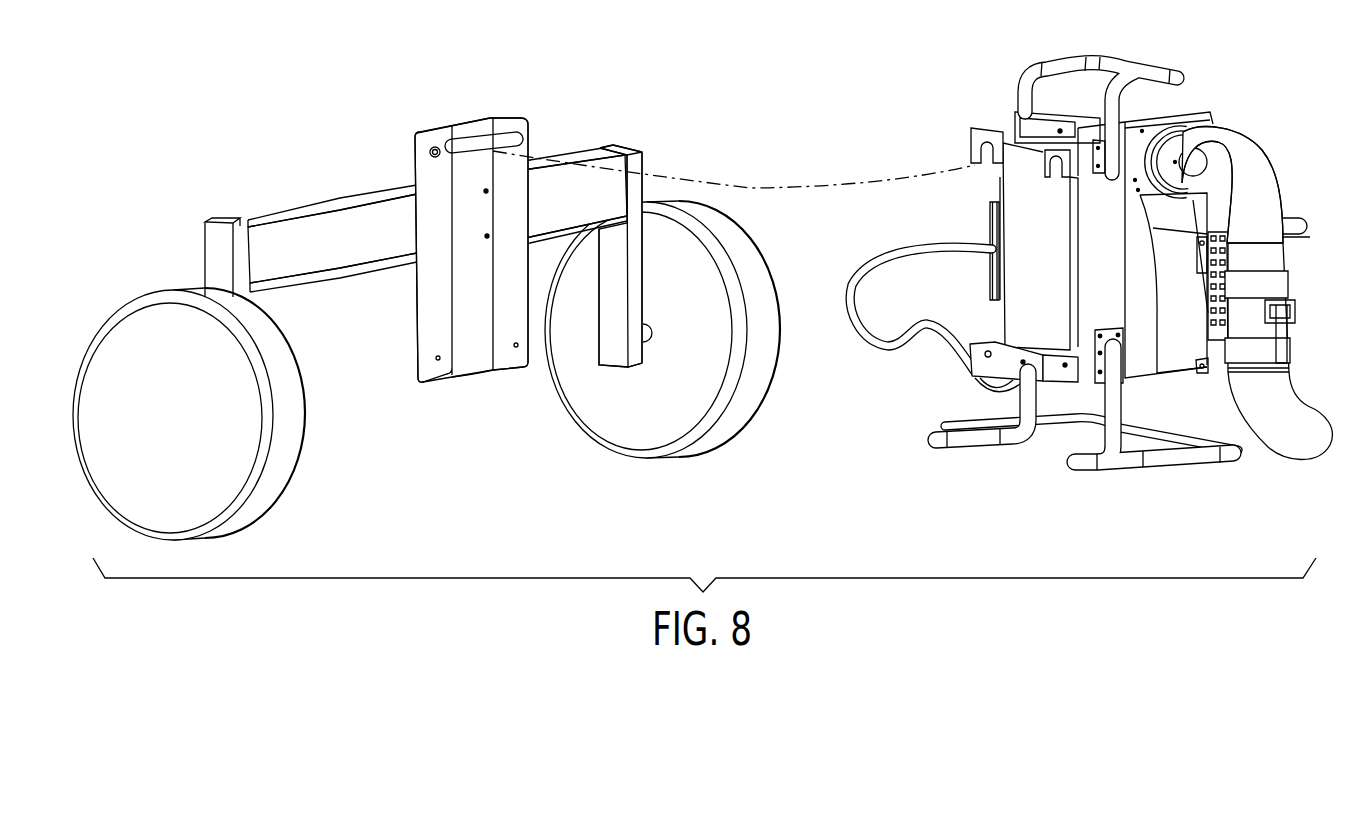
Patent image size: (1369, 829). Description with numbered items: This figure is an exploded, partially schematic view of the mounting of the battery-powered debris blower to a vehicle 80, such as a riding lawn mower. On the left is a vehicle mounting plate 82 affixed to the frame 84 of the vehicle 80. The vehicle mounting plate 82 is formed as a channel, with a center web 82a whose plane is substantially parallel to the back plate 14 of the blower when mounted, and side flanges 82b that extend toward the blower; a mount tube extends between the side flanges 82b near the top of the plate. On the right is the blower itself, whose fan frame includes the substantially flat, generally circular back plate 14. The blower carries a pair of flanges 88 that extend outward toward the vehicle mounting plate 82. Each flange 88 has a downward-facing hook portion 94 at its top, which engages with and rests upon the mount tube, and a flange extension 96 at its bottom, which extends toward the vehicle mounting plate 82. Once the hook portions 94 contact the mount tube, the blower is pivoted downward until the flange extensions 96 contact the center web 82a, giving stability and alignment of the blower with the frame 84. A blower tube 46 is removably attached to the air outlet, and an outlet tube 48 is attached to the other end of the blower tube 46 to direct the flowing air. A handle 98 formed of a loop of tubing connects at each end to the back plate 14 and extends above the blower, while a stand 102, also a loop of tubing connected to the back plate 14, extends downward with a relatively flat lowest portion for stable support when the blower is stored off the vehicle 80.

The back plate 14 is at (1164, 373).
The blower tube 46 is at (1253, 178).
The outlet tube 48 is at (1307, 441).
The vehicle 80 is at (212, 255).
The vehicle mounting plate 82 is at (466, 258).
The center web 82a is at (463, 130).
The side flanges 82b is at (414, 166).
The frame 84 is at (317, 210).
The flanges 88 is at (1087, 255).
The hook portion 94 is at (1053, 152).
The flange extension 96 is at (1053, 381).
The handle 98 is at (1132, 64).
The stand 102 is at (1108, 468).